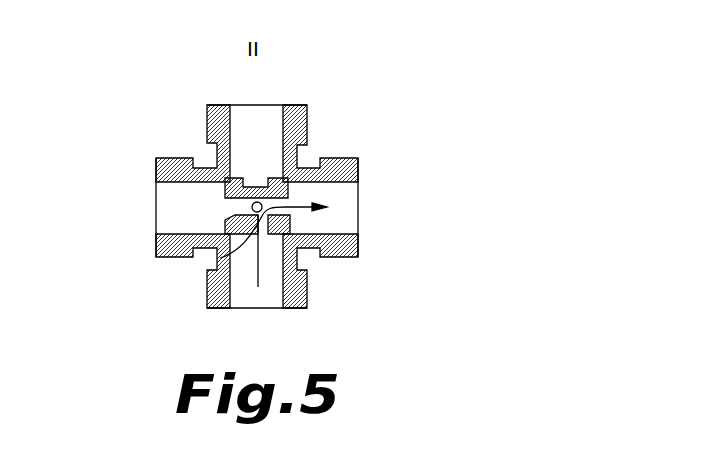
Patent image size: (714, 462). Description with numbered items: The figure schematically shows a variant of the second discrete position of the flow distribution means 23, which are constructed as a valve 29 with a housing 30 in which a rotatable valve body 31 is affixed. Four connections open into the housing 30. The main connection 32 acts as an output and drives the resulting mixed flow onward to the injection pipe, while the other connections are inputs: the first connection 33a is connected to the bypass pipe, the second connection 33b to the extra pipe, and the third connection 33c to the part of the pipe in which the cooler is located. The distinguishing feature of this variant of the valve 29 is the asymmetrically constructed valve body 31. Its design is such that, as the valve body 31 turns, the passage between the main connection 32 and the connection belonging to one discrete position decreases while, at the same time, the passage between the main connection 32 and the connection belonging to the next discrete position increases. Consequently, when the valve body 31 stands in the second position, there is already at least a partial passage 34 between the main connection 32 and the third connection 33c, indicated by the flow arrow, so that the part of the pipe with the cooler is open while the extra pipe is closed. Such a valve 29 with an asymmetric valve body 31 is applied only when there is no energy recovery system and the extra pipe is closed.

The flow distribution means 23 is at (240, 181).
The valve 29 is at (212, 167).
The housing 30 is at (305, 244).
The valve body 31 is at (238, 177).
The main connection 32 is at (341, 172).
The first connection 33a is at (222, 105).
The second connection 33b is at (167, 157).
The third connection 33c is at (220, 297).
The partial passage 34 is at (220, 258).